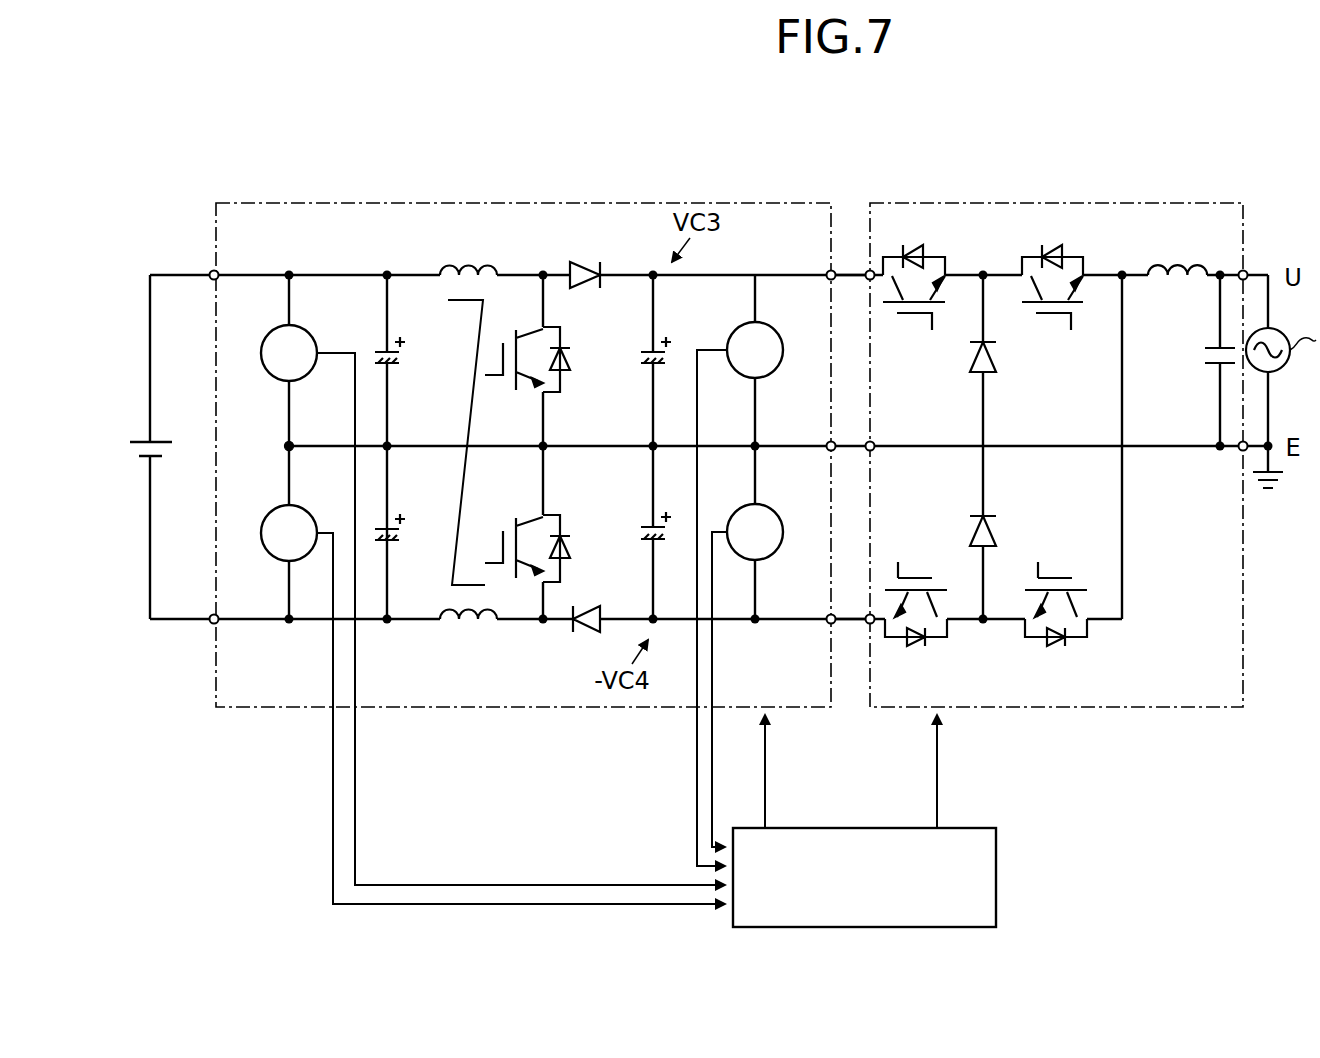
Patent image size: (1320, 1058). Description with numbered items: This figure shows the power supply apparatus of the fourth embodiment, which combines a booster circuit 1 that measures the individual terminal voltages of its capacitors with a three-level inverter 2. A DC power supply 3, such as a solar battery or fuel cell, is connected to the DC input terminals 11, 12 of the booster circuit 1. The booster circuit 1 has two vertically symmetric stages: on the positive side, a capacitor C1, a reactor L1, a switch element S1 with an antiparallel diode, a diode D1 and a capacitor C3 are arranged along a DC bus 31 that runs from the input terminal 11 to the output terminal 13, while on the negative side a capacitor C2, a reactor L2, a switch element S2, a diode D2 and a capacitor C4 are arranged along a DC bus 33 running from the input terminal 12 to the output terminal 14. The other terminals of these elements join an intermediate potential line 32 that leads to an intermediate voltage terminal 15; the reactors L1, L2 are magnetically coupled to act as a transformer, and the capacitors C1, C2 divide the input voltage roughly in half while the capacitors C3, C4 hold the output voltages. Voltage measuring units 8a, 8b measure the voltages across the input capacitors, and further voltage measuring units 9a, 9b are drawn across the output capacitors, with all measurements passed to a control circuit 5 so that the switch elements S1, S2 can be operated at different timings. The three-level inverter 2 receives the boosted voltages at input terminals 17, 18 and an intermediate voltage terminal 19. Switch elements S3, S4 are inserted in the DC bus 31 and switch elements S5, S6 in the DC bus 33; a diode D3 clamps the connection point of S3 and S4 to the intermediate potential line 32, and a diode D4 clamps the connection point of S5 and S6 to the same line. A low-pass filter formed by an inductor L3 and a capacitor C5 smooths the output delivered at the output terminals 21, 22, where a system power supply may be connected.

The booster circuit 1 is at (418, 203).
The three-level inverter 2 is at (1091, 202).
The DC power supply 3 is at (160, 430).
The control circuit 5 is at (996, 873).
The voltage measuring unit 8a is at (276, 331).
The voltage measuring unit 8b is at (283, 562).
The voltage sensor V3 9a is at (776, 331).
The voltage sensor V4 9b is at (776, 557).
The DC input terminal 11 is at (212, 271).
The DC input terminal 12 is at (212, 623).
The output terminal 13 is at (830, 270).
The output terminal 14 is at (830, 624).
The intermediate voltage terminal 15 is at (829, 444).
The input terminal 17 is at (871, 270).
The input terminal 18 is at (871, 624).
The intermediate voltage terminal 19 is at (871, 444).
The output terminal 21 is at (1246, 273).
The output terminal 22 is at (1241, 448).
The DC bus 31 is at (846, 270).
The intermediate potential line 32 is at (287, 446).
The DC bus 33 is at (850, 624).
The reactor L1 is at (468, 247).
The reactor L2 is at (468, 640).
The inductor L3 is at (1177, 245).
The diode D1 is at (585, 253).
The diode D2 is at (590, 635).
The diode D3 is at (1002, 381).
The diode D4 is at (1002, 510).
The capacitor C1 is at (403, 377).
The capacitor C2 is at (403, 507).
The capacitor C3 is at (640, 382).
The capacitor C4 is at (642, 519).
The capacitor C5 is at (1204, 382).
The switch element S1 is at (541, 373).
The switch element S2 is at (540, 528).
The switch element S3 is at (914, 272).
The switch element S4 is at (1052, 272).
The switch element S5 is at (916, 624).
The switch element S6 is at (1056, 624).